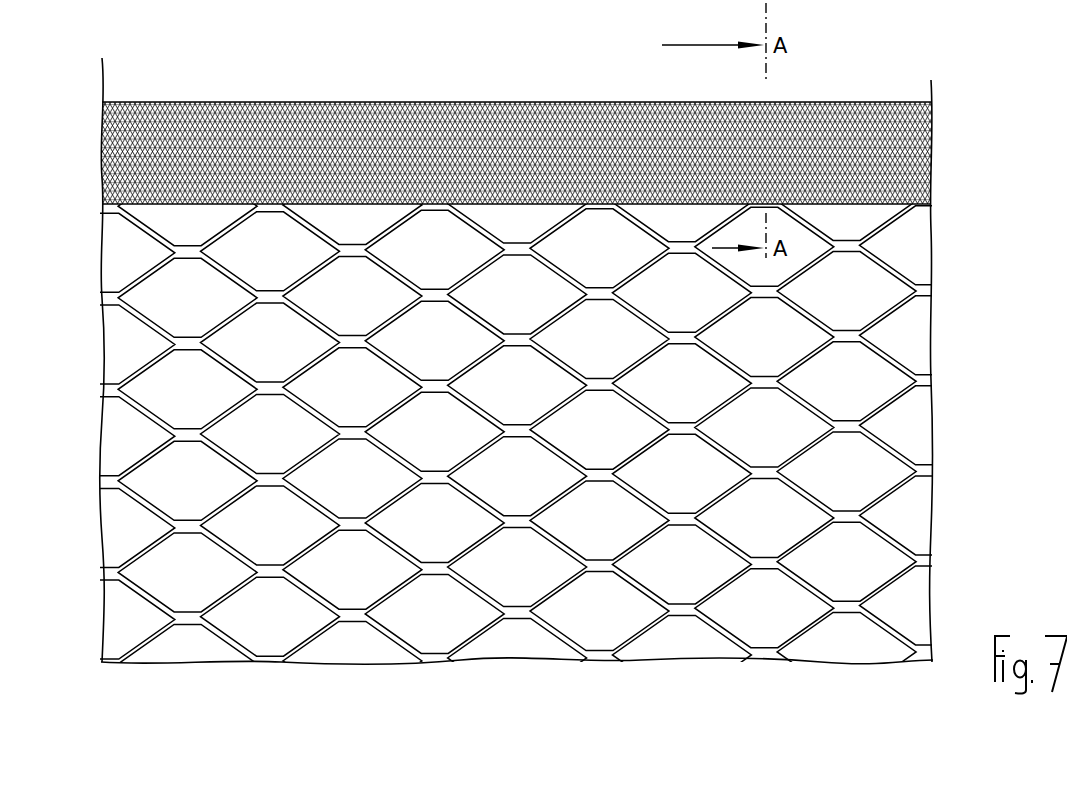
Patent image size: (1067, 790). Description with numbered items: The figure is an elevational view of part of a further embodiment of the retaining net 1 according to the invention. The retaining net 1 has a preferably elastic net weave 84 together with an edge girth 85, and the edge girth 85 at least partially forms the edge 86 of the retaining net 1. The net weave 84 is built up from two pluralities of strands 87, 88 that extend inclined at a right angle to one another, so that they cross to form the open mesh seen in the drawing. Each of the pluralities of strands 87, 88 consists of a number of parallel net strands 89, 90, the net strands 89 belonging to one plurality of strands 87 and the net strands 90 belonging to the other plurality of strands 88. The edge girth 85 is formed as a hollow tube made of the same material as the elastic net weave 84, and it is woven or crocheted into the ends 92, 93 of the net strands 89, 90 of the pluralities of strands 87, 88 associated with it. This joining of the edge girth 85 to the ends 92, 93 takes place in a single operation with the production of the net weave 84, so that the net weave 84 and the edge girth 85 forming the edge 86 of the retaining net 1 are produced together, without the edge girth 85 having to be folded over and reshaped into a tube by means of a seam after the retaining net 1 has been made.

The retaining net 1 is at (597, 682).
The net weave 84 is at (352, 693).
The edge girth 85 is at (516, 108).
The edge 86 is at (263, 94).
The plurality of strands 87 is at (475, 628).
The plurality of strands 88 is at (805, 623).
The net strand 89 is at (352, 640).
The net strand 90 is at (681, 684).
The end of net strand 92 is at (354, 131).
The end of net strand 93 is at (511, 129).